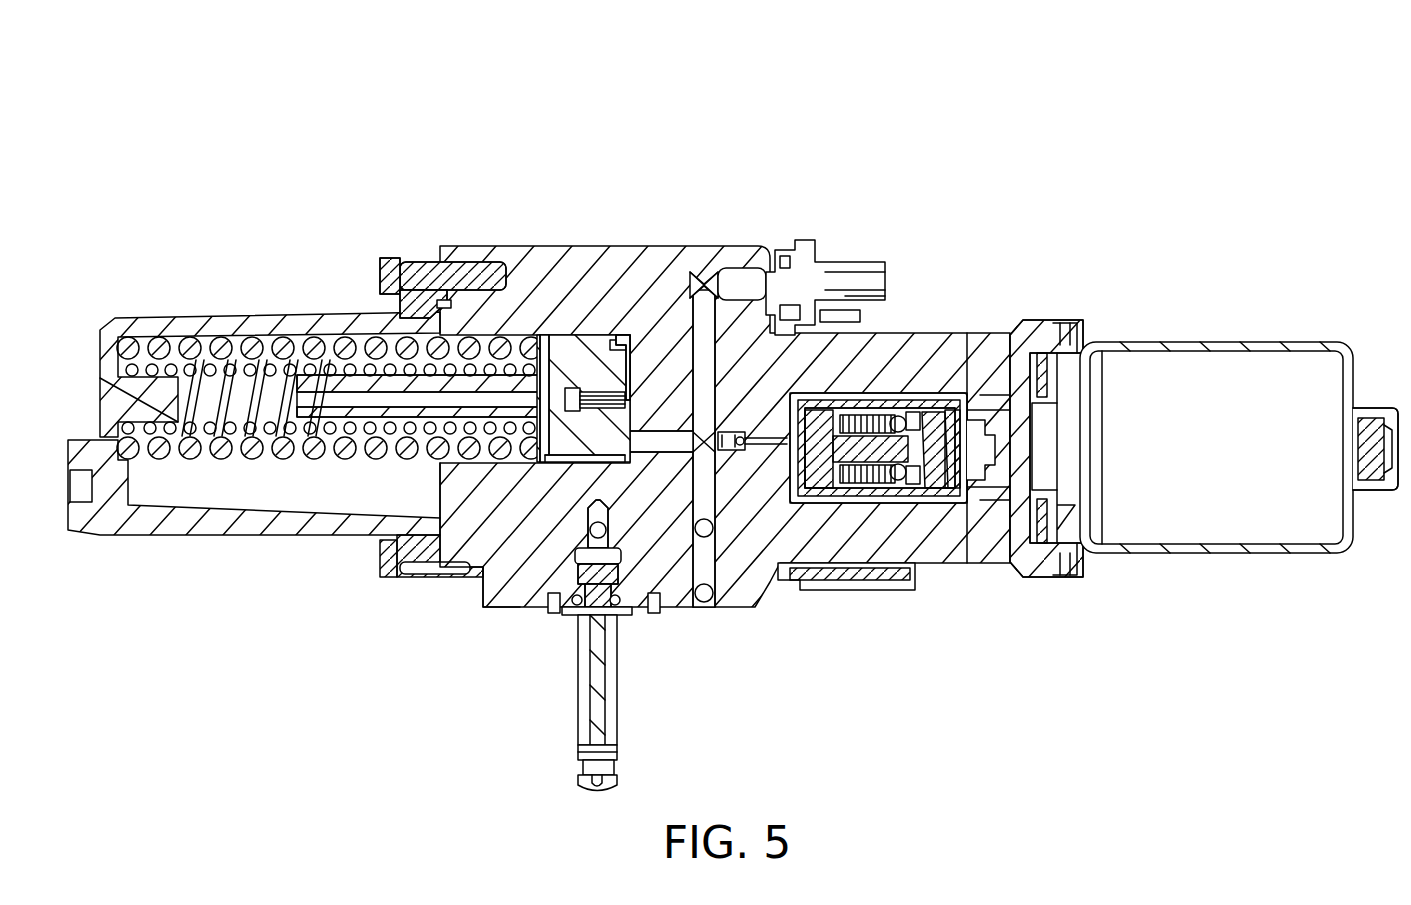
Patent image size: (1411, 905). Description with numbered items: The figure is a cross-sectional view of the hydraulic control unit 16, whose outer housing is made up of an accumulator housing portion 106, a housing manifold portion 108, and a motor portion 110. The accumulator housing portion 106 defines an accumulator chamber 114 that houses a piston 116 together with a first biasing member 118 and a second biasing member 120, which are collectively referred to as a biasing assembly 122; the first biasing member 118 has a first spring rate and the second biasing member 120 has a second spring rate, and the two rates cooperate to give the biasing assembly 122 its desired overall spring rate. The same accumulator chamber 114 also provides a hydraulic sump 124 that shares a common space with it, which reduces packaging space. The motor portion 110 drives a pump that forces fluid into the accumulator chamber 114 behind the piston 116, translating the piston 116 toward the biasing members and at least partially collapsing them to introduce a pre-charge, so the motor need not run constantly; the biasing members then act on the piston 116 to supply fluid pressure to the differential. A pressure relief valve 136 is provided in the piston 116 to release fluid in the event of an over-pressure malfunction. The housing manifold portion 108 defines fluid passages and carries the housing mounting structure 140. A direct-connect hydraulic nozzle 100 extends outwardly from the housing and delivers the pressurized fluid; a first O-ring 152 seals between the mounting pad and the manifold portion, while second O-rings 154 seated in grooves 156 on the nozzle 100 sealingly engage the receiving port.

The hydraulic control unit 16 is at (1122, 117).
The hydraulic nozzle 100 is at (620, 690).
The accumulator housing portion 106 is at (268, 300).
The housing manifold portion 108 is at (662, 242).
The motor portion 110 is at (1268, 327).
The accumulator chamber 114 is at (648, 335).
The piston 116 is at (602, 330).
The first biasing member 118 is at (194, 340).
The second biasing member 120 is at (172, 362).
The biasing assembly 122 is at (100, 355).
The hydraulic sump 124 is at (302, 487).
The pressure relief valve 136 is at (612, 330).
The hydraulic control unit housing mounting structure 140 is at (470, 606).
The first O-ring 152 is at (568, 613).
The second O-rings 154 is at (617, 772).
The grooves 156 is at (578, 777).